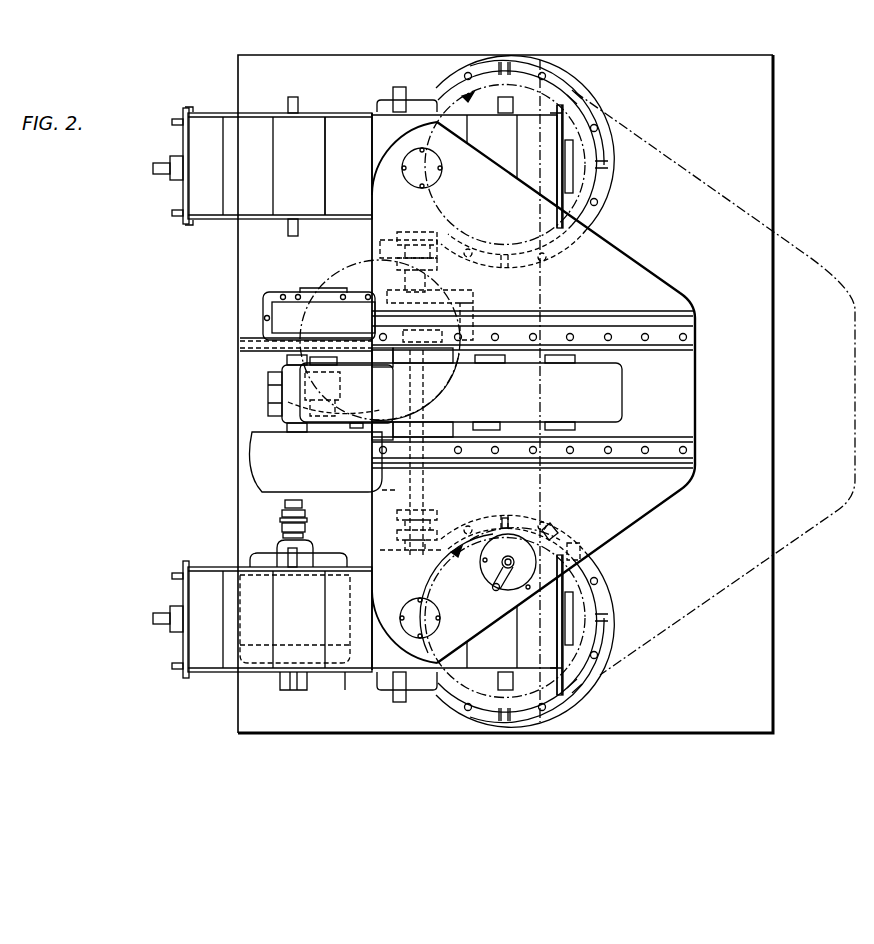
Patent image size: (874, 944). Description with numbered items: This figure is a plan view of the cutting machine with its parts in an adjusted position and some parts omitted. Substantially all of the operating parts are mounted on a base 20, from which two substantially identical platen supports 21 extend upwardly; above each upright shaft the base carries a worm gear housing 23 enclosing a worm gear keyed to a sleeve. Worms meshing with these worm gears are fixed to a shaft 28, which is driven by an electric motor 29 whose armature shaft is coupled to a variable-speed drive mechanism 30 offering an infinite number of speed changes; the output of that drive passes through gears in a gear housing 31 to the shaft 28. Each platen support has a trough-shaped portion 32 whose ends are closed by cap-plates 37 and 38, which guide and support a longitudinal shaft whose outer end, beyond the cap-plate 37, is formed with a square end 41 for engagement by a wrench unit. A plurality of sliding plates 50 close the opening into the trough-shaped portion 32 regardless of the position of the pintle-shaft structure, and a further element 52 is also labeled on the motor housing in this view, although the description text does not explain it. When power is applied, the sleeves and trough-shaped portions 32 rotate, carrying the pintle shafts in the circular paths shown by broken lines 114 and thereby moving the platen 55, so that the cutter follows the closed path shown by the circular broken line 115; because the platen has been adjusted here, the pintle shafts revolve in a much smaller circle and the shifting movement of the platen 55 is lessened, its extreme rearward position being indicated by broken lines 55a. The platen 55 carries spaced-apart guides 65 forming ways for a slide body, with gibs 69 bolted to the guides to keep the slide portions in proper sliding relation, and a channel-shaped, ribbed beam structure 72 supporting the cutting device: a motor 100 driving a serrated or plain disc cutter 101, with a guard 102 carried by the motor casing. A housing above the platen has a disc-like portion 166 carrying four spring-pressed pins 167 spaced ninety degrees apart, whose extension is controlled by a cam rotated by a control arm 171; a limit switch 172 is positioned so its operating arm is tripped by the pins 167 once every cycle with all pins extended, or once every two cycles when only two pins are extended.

The base 20 is at (757, 130).
The platen support 21 is at (589, 106).
The worm gear housing 23 is at (586, 118).
The shaft 28 is at (378, 494).
The electric motor 29 is at (256, 563).
The variable-speed drive mechanism 30 is at (260, 465).
The gear housing 31 is at (283, 308).
The trough-shaped portion 32 is at (345, 672).
The cap-plate 37 is at (180, 214).
The cap-plate 38 is at (570, 150).
The square end 41 is at (153, 172).
The plates 50 is at (277, 123).
The motor housing section 52 is at (330, 112).
The platen 55 is at (635, 253).
The broken lines 55a is at (811, 256).
The guides 65 is at (630, 280).
The gibs 69 is at (688, 341).
The beam structure 72 is at (624, 402).
The motor 100 is at (274, 393).
The disc cutter 101 is at (253, 353).
The guard 102 is at (252, 346).
The broken lines 114 is at (515, 83).
The circular broken line 115 is at (341, 274).
The disc-like portion 166 is at (530, 561).
The pins 167 is at (490, 539).
The control arm 171 is at (501, 581).
The limit switch 172 is at (545, 543).